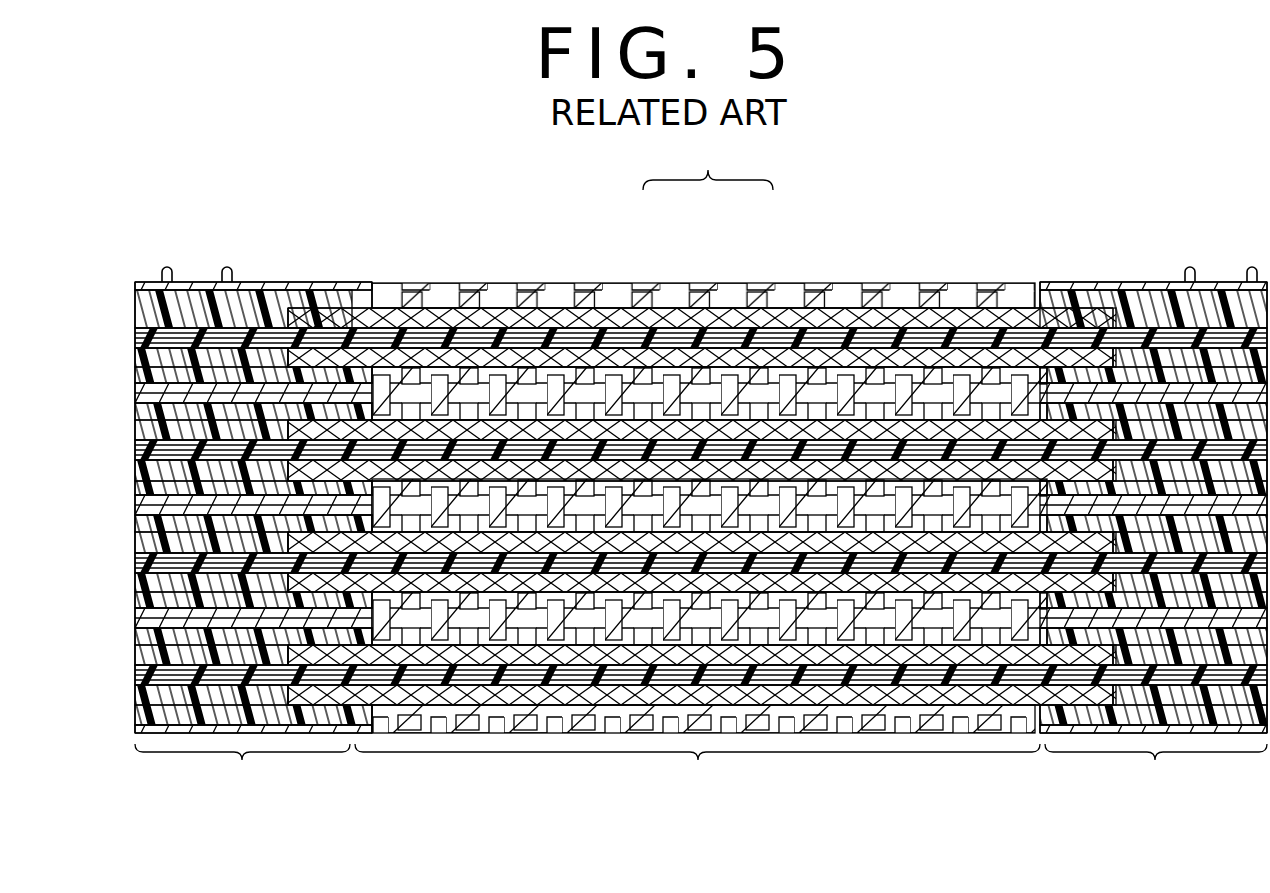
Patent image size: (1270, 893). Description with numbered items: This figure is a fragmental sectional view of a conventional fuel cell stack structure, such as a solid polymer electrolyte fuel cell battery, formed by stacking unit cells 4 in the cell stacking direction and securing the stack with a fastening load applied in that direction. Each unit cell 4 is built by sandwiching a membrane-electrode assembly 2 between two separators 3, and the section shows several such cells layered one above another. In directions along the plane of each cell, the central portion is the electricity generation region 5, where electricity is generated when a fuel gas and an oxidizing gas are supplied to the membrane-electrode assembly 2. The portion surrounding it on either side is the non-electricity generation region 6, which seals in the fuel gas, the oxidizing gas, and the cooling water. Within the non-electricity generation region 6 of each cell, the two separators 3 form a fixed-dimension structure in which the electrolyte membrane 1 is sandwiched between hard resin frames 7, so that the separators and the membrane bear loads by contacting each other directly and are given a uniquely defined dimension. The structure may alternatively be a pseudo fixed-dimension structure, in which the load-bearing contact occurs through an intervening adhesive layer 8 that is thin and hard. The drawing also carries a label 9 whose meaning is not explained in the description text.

The electrolyte membrane 1 is at (1060, 340).
The membrane-electrode assembly 2 is at (648, 330).
The separator 3 is at (725, 355).
The unit cell 4 is at (708, 158).
The electricity generation region 5 is at (697, 774).
The non-electricity generation region 6 is at (701, 543).
The hard resin frame 7 is at (1150, 360).
The adhesive layer 8 is at (1218, 340).
The terminal electrode 9 is at (1185, 268).